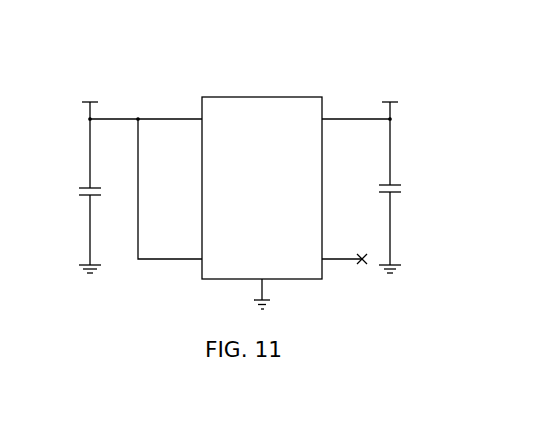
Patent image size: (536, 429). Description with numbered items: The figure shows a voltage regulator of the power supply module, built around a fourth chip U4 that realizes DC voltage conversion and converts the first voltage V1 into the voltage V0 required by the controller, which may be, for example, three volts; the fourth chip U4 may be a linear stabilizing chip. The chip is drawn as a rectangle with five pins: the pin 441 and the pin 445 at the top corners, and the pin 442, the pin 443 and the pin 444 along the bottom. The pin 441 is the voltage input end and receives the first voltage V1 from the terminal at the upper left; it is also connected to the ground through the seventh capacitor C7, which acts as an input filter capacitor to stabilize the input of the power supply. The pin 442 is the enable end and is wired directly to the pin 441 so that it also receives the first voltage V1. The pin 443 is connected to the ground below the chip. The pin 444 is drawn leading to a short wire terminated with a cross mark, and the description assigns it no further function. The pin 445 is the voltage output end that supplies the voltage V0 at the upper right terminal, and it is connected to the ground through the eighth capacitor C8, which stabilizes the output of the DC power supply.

The voltage input end pin 441 is at (168, 120).
The enable end pin 442 is at (192, 195).
The ground pin 443 is at (262, 284).
The pin 444 is at (327, 259).
The voltage output end pin 445 is at (337, 120).
The fourth chip U4 is at (262, 188).
The seventh capacitor C7 is at (103, 226).
The eighth capacitor C8 is at (401, 227).
The first voltage V1 is at (90, 132).
The voltage required by the controller V0 is at (390, 131).